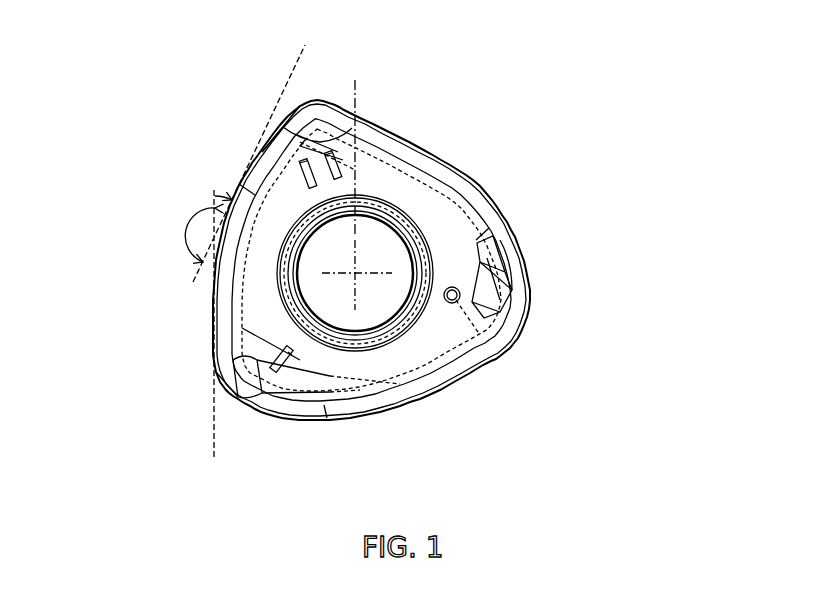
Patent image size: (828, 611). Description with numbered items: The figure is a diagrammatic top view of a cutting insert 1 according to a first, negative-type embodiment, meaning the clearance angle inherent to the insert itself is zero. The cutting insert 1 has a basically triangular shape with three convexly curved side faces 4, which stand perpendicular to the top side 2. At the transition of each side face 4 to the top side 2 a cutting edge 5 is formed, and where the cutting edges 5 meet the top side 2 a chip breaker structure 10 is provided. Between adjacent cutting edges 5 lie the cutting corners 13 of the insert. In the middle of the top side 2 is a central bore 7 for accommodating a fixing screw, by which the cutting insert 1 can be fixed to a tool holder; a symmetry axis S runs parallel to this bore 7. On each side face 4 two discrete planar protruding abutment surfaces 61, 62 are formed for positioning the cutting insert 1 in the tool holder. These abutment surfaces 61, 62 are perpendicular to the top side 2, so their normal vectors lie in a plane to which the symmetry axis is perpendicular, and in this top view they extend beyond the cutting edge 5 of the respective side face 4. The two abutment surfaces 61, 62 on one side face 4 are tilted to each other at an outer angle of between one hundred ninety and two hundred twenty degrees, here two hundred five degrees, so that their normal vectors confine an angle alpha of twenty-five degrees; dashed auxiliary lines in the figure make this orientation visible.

The cutting insert 1 is at (565, 67).
The top side 2 is at (453, 270).
The side face 4 is at (453, 169).
The cutting edge 5 is at (507, 336).
The central bore 7 is at (357, 138).
The chip breaker structure 10 is at (513, 261).
The cutting corner 13 is at (305, 103).
The abutment surface 61 is at (394, 132).
The abutment surface 62 is at (241, 180).